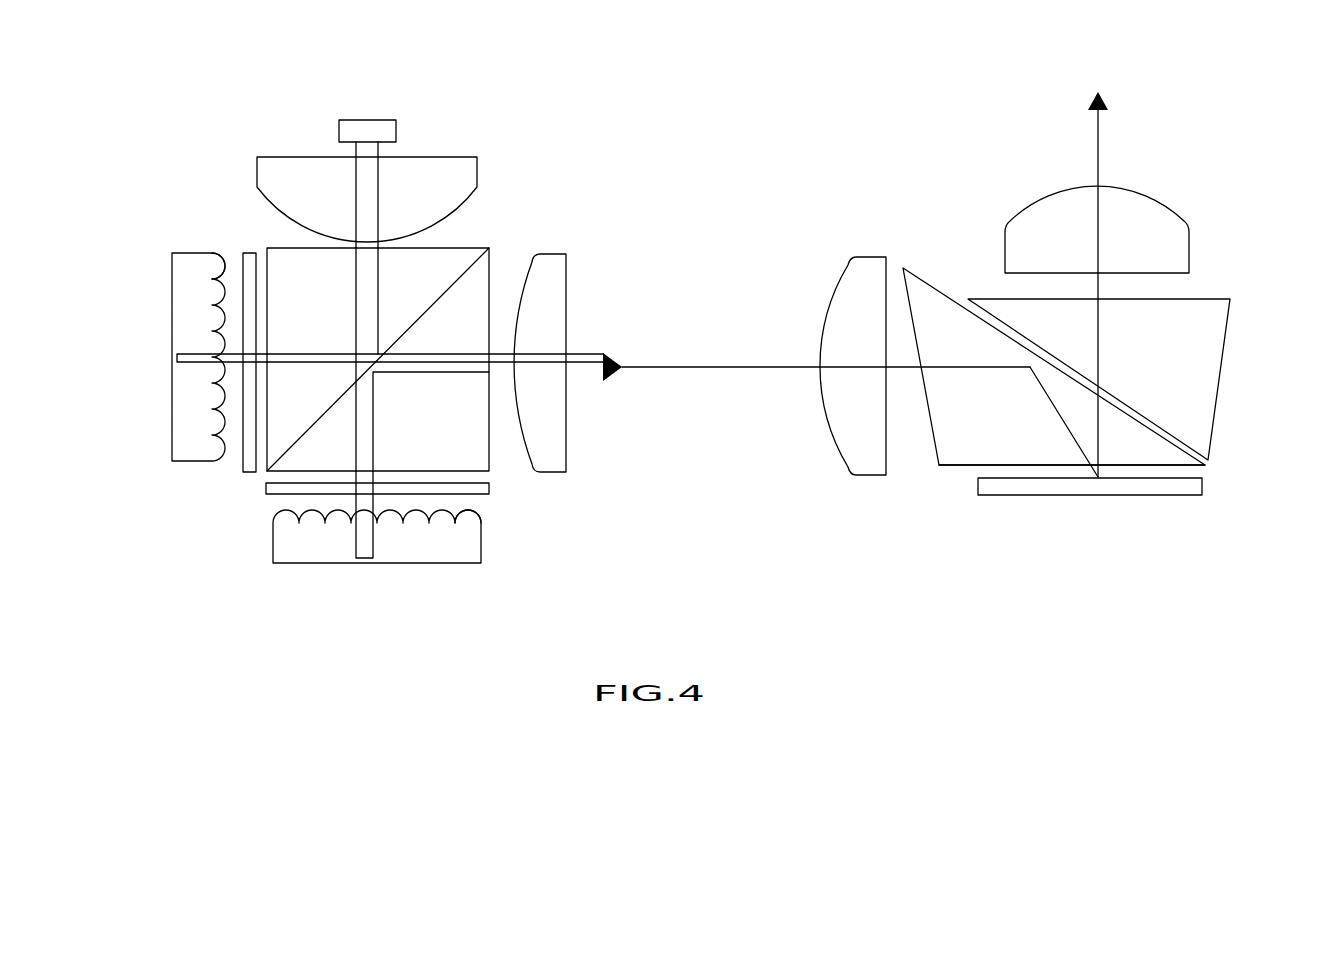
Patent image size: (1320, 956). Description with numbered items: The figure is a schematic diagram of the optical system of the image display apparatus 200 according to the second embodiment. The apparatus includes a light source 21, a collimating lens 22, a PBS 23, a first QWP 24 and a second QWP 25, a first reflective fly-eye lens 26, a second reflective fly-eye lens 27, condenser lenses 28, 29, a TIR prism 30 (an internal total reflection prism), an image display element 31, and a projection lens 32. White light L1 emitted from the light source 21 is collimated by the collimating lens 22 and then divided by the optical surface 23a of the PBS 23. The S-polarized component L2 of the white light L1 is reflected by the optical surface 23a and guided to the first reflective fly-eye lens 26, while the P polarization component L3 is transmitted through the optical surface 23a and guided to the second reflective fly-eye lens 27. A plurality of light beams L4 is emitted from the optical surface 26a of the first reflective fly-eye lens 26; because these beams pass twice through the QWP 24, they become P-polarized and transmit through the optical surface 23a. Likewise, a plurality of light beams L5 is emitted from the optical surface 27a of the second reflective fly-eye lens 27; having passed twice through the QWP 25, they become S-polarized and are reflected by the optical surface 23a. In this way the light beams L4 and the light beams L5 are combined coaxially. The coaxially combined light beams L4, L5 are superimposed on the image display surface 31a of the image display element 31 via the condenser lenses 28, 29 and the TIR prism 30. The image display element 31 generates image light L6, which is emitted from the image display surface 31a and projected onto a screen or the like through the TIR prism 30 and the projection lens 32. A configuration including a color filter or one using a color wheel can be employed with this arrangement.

The image display apparatus 200 is at (712, 126).
The light source 21 is at (362, 120).
The collimating lens 22 is at (470, 157).
The PBS 23 is at (489, 248).
The optical surface 23a is at (465, 275).
The QWP 24 is at (252, 472).
The QWP 25 is at (491, 490).
The first reflective fly-eye lens 26 is at (172, 421).
The optical surface 26a is at (222, 252).
The second reflective fly-eye lens 27 is at (452, 563).
The optical surface 27a is at (477, 511).
The condenser lens 28 is at (568, 262).
The condenser lens 29 is at (862, 257).
The TIR prism 30 is at (906, 267).
The image display element 31 is at (1033, 496).
The image display surface 31a is at (1000, 477).
The projection lens 32 is at (1170, 198).
The white light L1 is at (358, 243).
The S-polarized component L2 is at (297, 354).
The P polarization component L3 is at (352, 430).
The plurality of light beams L4 is at (450, 354).
The plurality of light beams L5 is at (440, 372).
The image light L6 is at (1098, 355).